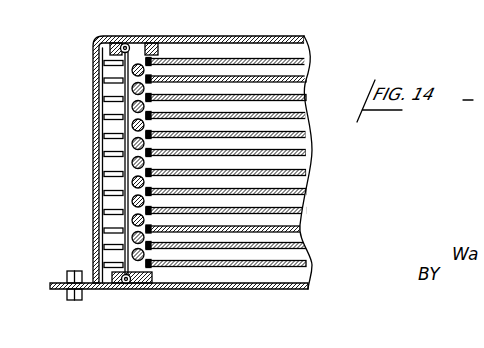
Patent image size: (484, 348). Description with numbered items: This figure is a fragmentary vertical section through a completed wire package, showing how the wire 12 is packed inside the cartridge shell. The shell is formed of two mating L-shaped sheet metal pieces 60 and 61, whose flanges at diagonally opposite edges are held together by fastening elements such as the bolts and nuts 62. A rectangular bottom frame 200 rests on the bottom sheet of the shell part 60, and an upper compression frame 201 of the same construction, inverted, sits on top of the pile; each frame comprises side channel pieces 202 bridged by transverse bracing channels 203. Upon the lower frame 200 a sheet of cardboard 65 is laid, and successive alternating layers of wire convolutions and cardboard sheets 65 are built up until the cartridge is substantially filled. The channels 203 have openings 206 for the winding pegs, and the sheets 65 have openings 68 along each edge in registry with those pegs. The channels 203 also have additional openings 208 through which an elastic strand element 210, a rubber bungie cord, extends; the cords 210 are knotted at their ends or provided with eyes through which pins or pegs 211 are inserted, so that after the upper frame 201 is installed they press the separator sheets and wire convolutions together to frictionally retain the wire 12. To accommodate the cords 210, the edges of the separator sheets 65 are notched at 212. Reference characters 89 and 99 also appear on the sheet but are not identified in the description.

The wire 12 is at (130, 160).
The L-shaped sheet metal piece 60 is at (298, 286).
The L-shaped sheet metal piece 61 is at (218, 35).
The bolts and nuts 62 is at (69, 271).
The cardboard sheet 65 is at (305, 150).
The openings 68 is at (150, 72).
The element 89 is at (396, 6).
The element 99 is at (269, 5).
The bottom frame 200 is at (199, 279).
The upper compression frame 201 is at (300, 53).
The side channel pieces 202 is at (262, 47).
The transverse bracing channels 203 is at (138, 43).
The openings 206 is at (145, 290).
The additional openings 208 is at (92, 68).
The elastic strand element 210 is at (125, 107).
The pins or pegs 211 is at (118, 37).
The notches 212 is at (98, 88).